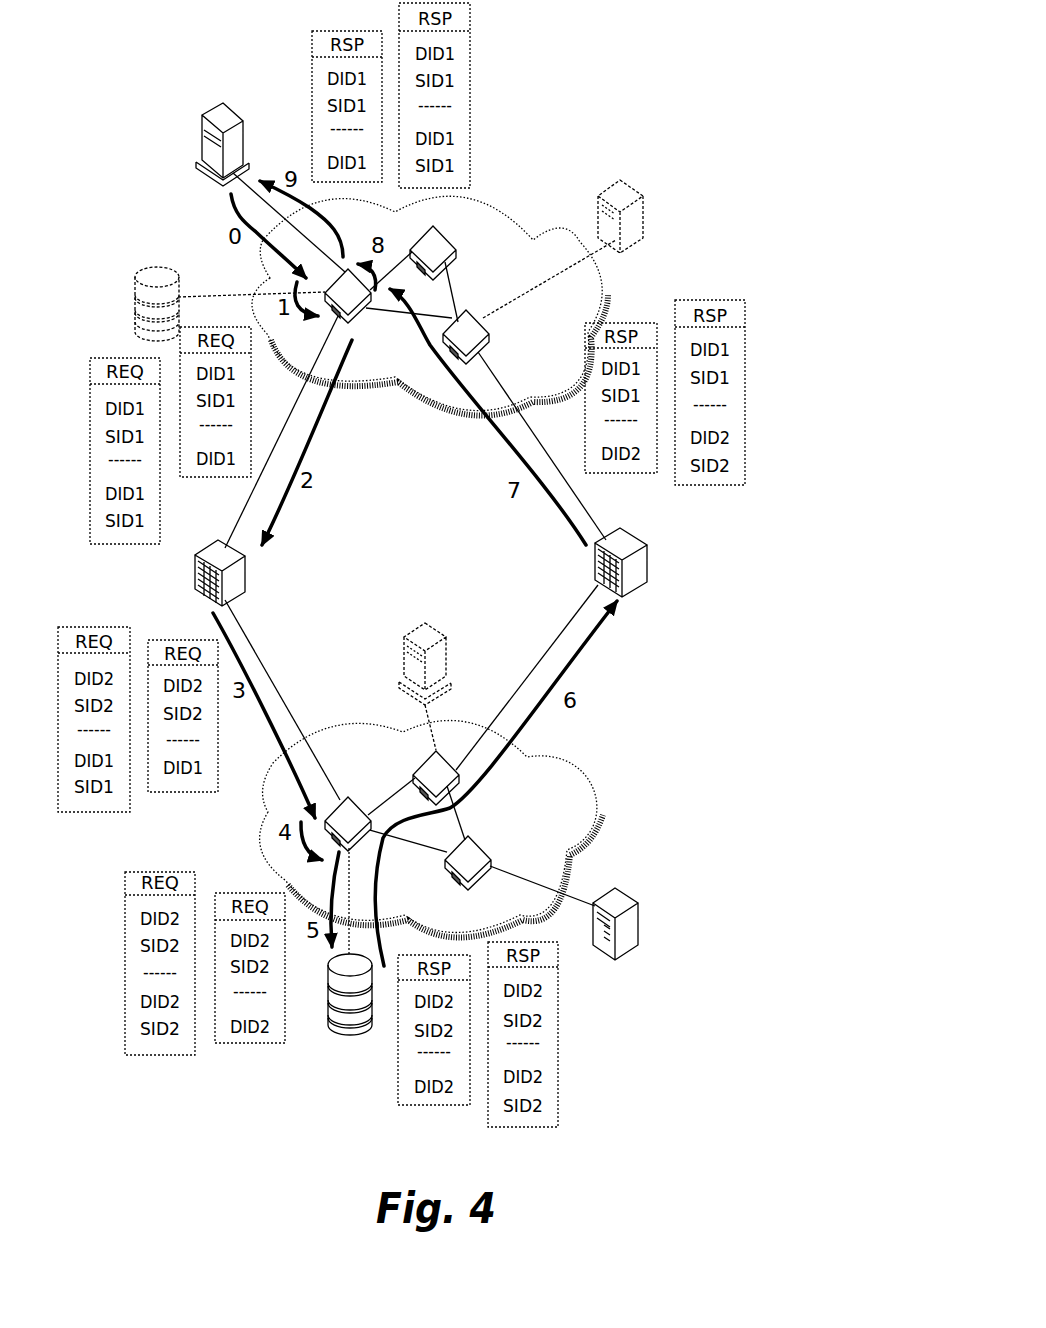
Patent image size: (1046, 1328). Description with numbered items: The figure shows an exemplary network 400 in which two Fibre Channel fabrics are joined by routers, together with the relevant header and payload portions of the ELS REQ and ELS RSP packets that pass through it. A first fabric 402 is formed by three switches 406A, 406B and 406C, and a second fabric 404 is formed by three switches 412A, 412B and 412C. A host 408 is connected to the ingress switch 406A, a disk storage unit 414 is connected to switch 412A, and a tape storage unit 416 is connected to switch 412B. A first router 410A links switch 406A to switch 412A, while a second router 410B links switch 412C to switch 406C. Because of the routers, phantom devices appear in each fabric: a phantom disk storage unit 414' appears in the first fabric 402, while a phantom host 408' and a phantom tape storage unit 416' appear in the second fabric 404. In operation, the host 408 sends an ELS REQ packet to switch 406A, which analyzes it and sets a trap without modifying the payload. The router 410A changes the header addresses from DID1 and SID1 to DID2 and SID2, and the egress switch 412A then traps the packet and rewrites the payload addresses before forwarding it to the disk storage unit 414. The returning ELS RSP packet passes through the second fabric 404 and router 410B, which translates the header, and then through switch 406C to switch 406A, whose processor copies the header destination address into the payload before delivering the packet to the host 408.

The network 400 is at (838, 305).
The first fabric 402 is at (442, 410).
The second fabric 404 is at (600, 832).
The ingress switch 406A is at (360, 314).
The switch 406B is at (452, 242).
The switch 406C is at (490, 348).
The host 408 is at (182, 144).
The phantom host 408' is at (413, 641).
The first router 410A is at (246, 572).
The second router 410B is at (597, 560).
The egress switch 412A is at (328, 832).
The switch 412B is at (478, 842).
The switch 412C is at (455, 792).
The disk storage unit 414 is at (321, 1026).
The phantom disk storage unit 414' is at (114, 307).
The tape storage unit 416 is at (635, 939).
The phantom tape storage unit 416' is at (655, 207).